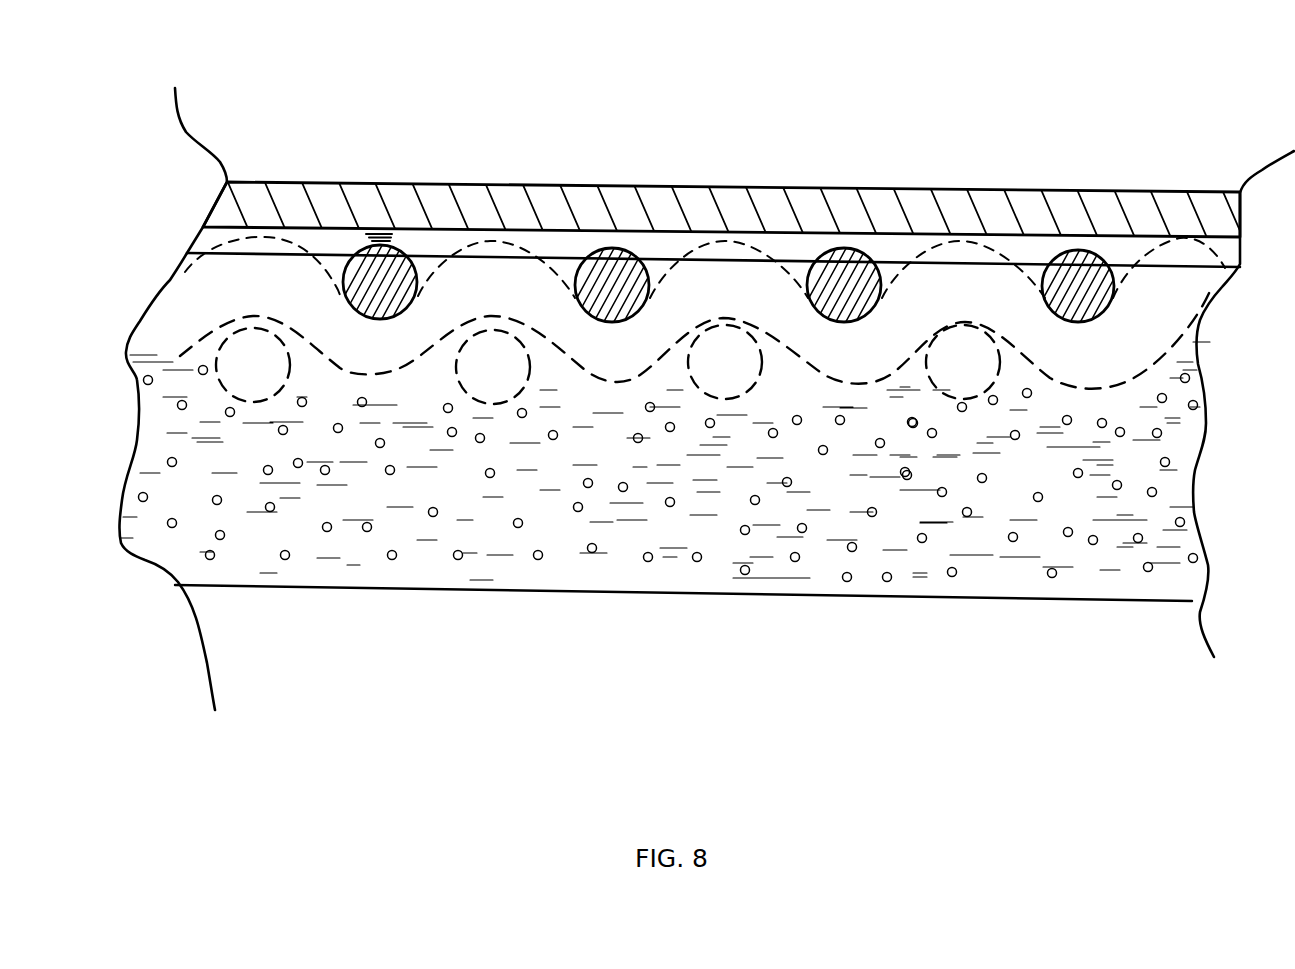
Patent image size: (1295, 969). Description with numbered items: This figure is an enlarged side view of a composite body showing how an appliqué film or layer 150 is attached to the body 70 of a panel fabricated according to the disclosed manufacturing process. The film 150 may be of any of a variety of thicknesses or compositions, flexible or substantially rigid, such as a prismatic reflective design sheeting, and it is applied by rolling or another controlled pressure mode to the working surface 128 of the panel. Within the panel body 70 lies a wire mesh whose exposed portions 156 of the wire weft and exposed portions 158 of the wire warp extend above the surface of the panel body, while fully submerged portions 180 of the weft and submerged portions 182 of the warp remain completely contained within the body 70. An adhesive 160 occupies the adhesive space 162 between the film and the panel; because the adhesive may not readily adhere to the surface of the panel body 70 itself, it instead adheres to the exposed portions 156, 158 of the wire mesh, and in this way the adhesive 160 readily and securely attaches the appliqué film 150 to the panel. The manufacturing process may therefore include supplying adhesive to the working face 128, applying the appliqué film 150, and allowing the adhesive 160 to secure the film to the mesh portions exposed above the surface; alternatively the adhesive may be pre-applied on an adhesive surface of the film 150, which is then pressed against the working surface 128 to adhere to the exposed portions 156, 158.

The working surface 128 is at (1185, 265).
The appliqué film 150 is at (690, 207).
The exposed portions of the wire weft 156 is at (614, 247).
The exposed portions of the wire warp 158 is at (490, 253).
The adhesive 160 is at (384, 231).
The adhesive space 162 is at (432, 246).
The submerged portions of the weft 180 is at (252, 362).
The submerged portions of the warp 182 is at (593, 365).
The panel body 70 is at (713, 477).